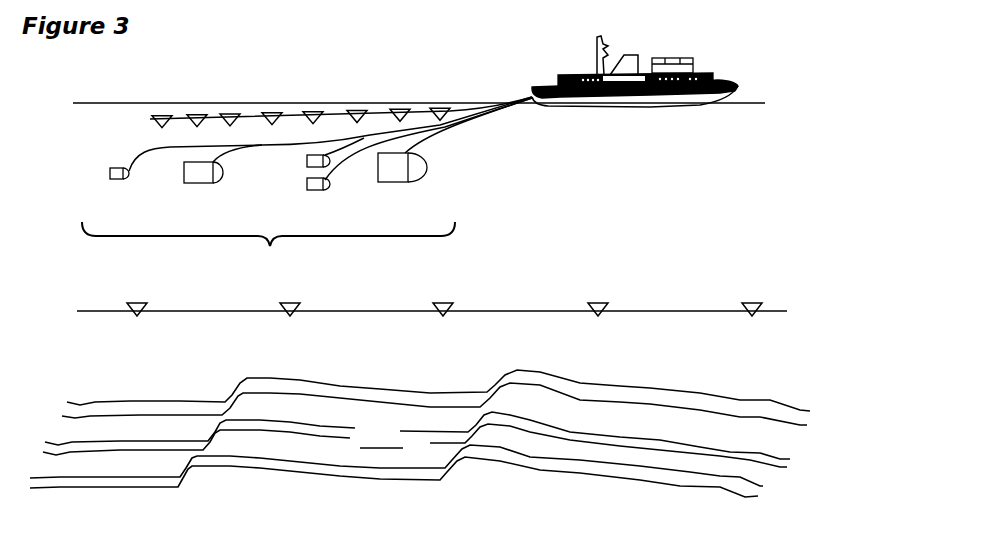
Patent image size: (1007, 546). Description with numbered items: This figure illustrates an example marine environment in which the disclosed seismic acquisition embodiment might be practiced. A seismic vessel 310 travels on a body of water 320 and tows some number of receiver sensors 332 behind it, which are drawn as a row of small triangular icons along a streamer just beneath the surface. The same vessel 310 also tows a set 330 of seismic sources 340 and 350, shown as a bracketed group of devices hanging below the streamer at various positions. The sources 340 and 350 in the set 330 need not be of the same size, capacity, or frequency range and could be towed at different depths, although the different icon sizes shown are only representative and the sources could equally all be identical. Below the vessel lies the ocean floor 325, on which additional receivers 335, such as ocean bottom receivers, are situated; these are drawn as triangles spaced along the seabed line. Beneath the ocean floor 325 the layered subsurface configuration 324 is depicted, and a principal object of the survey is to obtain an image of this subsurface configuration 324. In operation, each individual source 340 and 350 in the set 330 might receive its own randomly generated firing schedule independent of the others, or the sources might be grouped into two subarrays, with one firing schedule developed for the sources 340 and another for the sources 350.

The seismic vessel 310 is at (697, 60).
The body of water 320 is at (105, 102).
The subsurface configuration 324 is at (420, 433).
The ocean floor 325 is at (85, 310).
The set of seismic sources 330 is at (268, 250).
The receiver sensors 332 is at (315, 112).
The additional receivers 335 is at (137, 316).
The seismic source 340 is at (307, 184).
The seismic source 350 is at (116, 168).